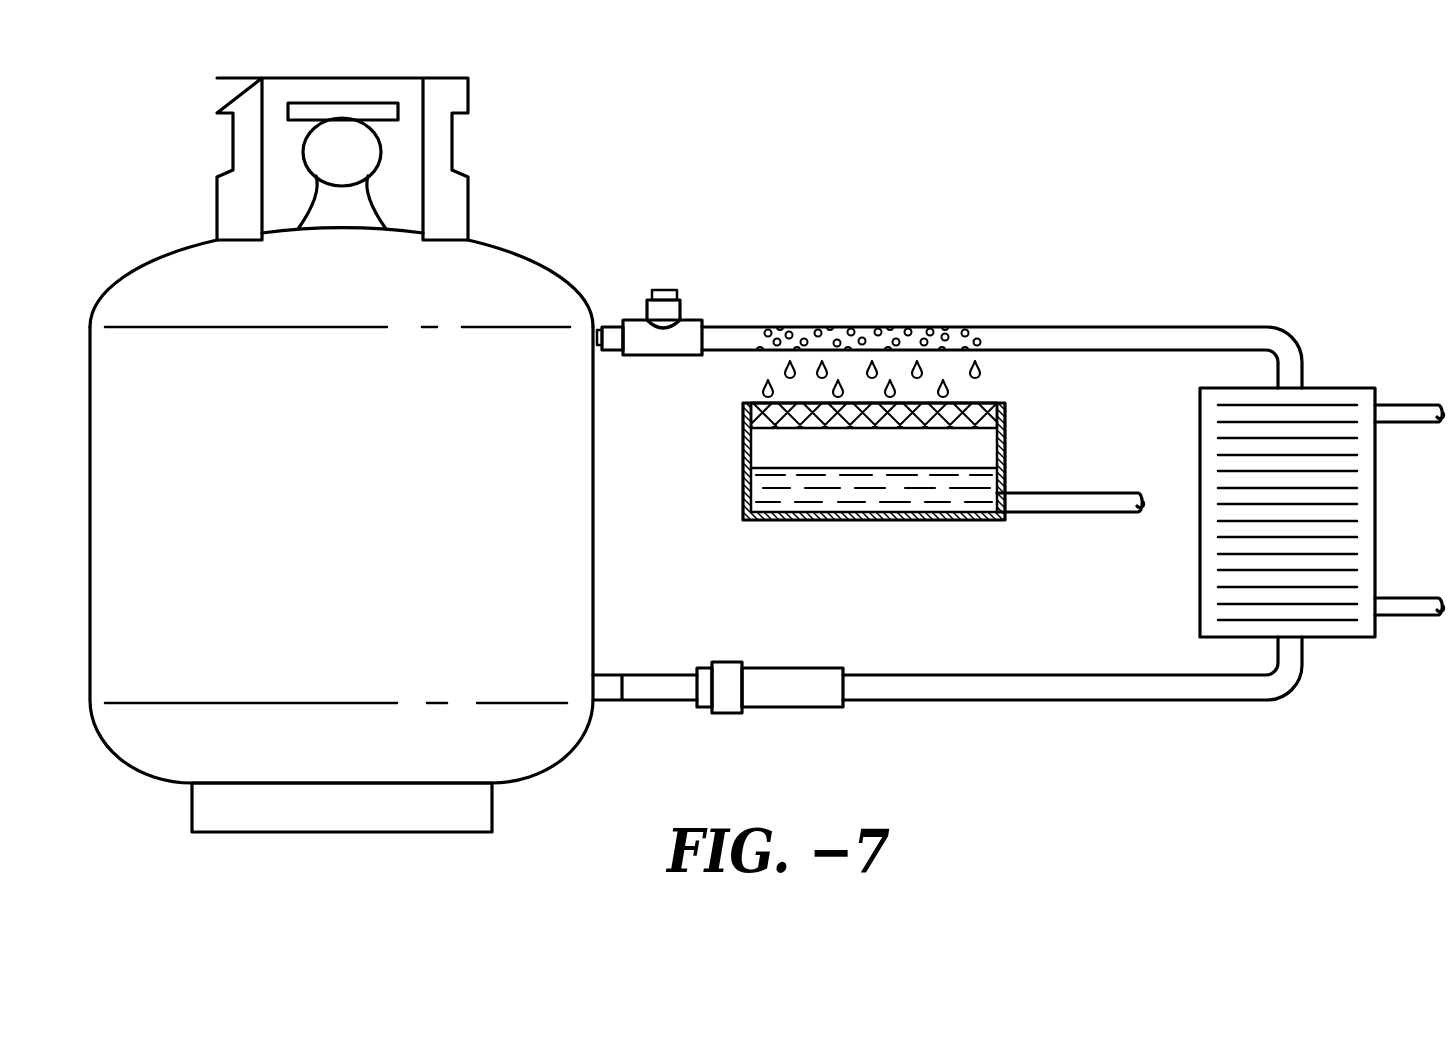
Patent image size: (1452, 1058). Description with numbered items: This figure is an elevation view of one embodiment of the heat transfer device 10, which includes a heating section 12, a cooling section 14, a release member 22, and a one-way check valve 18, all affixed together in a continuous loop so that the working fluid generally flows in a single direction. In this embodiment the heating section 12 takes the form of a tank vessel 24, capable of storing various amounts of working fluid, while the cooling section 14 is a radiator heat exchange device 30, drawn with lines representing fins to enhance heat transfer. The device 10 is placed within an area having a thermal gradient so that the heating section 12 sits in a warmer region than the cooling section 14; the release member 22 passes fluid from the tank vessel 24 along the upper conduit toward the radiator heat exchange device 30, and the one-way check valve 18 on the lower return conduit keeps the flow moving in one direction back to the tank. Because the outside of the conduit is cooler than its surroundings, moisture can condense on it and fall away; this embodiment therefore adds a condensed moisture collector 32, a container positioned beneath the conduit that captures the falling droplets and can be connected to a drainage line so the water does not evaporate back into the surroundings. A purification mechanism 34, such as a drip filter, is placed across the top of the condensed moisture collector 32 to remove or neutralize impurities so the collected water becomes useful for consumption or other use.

The heat transfer device 10 is at (905, 235).
The heating section 12 is at (505, 270).
The cooling section 14 is at (1375, 545).
The one-way check valve 18 is at (727, 662).
The release member 22 is at (692, 313).
The tank vessel 24 is at (543, 740).
The radiator heat exchange device 30 is at (1355, 388).
The condensed moisture collector 32 is at (957, 520).
The purification mechanism 34 is at (985, 403).